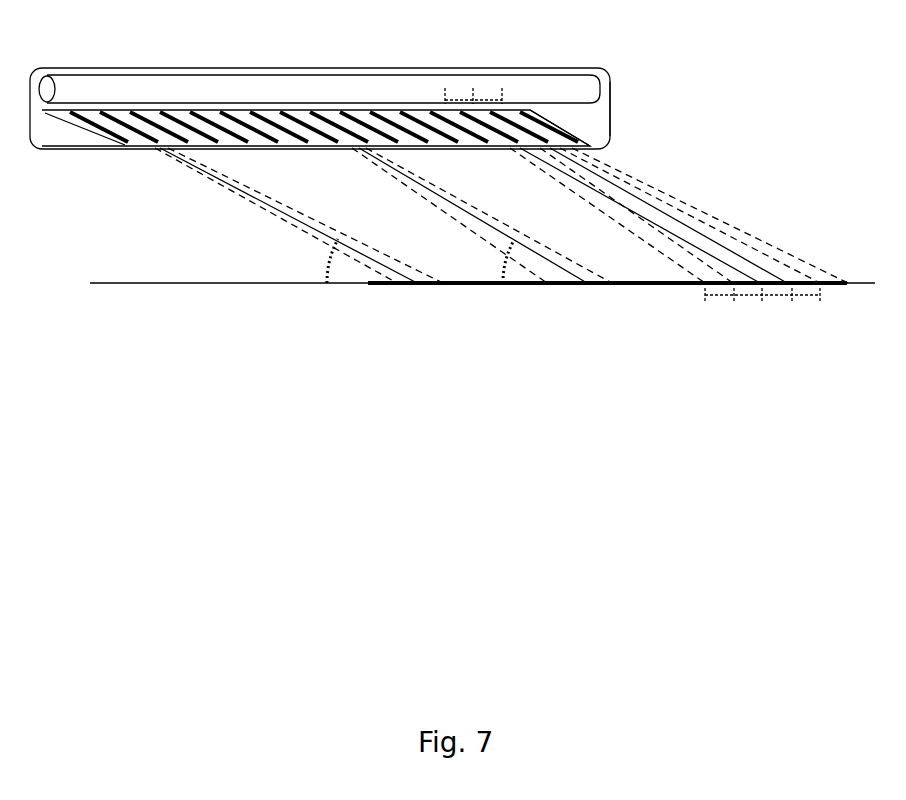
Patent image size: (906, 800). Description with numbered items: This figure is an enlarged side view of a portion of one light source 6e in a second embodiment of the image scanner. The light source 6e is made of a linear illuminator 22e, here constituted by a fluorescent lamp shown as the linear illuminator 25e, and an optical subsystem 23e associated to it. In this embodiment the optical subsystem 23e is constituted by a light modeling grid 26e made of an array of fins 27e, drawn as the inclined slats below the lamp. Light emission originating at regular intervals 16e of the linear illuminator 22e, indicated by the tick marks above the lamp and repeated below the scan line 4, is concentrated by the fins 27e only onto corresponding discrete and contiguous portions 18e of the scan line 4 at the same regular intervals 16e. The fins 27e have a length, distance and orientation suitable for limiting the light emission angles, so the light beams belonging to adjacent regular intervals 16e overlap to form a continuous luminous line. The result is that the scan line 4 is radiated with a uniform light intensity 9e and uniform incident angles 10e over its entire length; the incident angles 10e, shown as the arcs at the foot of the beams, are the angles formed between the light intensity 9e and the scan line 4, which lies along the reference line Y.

The light source 6e is at (255, 67).
The linear illuminator 22e is at (577, 88).
The linear illuminator 25e is at (607, 87).
The light modeling grid 26e is at (573, 131).
The optical subsystem 23e is at (587, 137).
The fins 27e is at (155, 147).
The regular intervals 16e is at (475, 98).
The light intensity 9e is at (360, 152).
The reference line Y is at (137, 285).
The scan line 4 is at (655, 287).
The incident angles 10e is at (330, 283).
The discrete and contiguous portion 18e is at (443, 285).